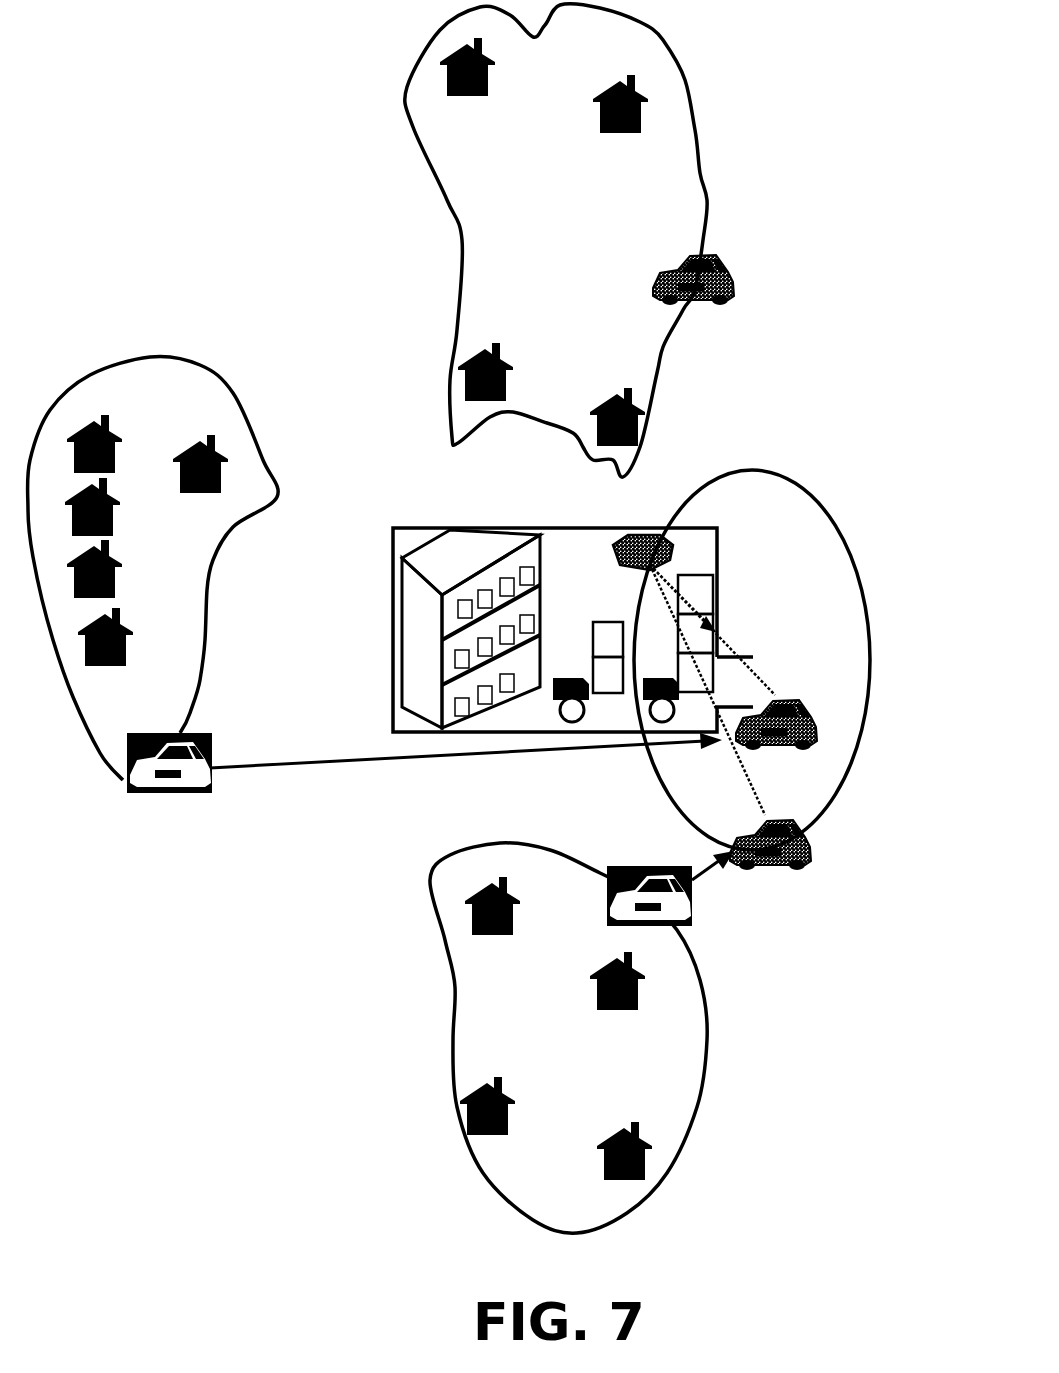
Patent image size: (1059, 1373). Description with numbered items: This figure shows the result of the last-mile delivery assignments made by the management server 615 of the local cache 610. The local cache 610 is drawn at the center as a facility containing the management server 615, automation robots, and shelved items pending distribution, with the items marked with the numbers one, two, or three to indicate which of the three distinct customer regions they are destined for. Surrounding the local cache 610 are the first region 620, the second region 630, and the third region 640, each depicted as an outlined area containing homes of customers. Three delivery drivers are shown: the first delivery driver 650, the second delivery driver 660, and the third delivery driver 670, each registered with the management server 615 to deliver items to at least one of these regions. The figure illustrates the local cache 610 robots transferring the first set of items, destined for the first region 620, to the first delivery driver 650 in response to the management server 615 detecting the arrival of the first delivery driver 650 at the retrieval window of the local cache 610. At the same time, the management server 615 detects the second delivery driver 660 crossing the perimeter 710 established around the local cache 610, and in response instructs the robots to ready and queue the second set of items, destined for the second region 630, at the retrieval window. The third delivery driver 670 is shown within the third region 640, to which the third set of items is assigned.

The local cache 610 is at (389, 528).
The management server 615 is at (663, 533).
The first region 620 is at (163, 355).
The second region 630 is at (707, 1030).
The third region 640 is at (670, 43).
The first delivery driver 650 is at (777, 693).
The second delivery driver 660 is at (802, 850).
The third delivery driver 670 is at (728, 268).
The perimeter 710 is at (833, 523).